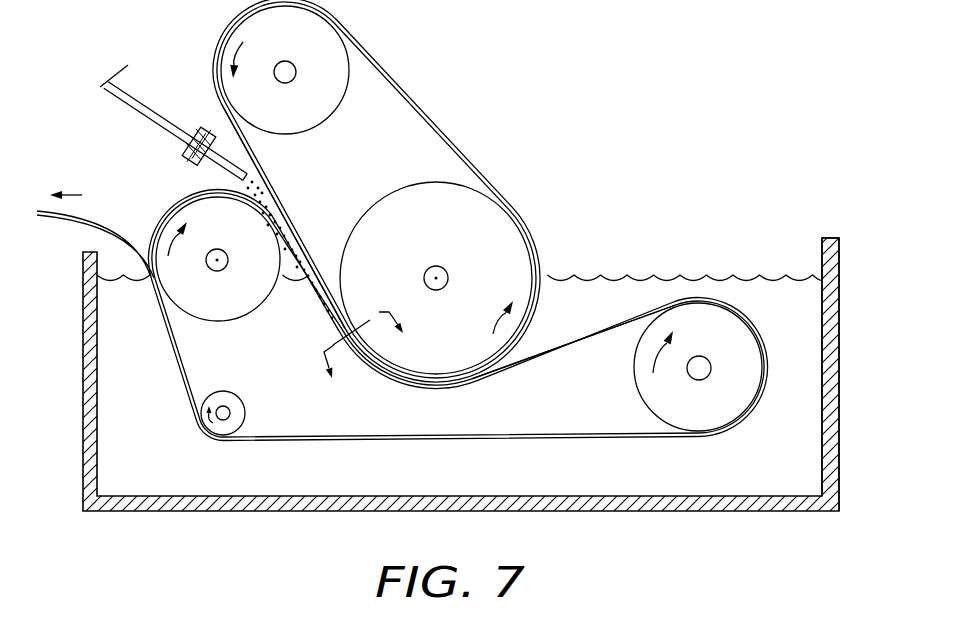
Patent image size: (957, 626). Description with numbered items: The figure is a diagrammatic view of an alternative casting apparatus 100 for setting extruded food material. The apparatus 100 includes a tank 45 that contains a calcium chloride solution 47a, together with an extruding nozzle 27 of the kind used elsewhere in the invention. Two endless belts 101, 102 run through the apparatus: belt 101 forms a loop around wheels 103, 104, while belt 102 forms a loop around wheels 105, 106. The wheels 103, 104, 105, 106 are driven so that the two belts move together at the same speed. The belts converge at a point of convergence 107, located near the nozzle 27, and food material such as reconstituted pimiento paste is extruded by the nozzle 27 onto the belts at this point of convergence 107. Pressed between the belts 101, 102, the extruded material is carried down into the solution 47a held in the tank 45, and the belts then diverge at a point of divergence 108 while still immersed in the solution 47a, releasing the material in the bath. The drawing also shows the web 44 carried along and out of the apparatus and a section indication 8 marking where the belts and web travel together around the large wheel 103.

The apparatus 100 is at (748, 218).
The endless belt 101 is at (414, 104).
The endless belt 102 is at (512, 441).
The wheel 103 is at (465, 243).
The wheel 104 is at (308, 50).
The wheel 105 is at (725, 349).
The wheel 106 is at (243, 243).
The point of convergence 107 is at (335, 213).
The point of divergence 108 is at (551, 372).
The extruding nozzle 27 is at (197, 126).
The web 44 is at (124, 240).
The tank 45 is at (840, 387).
The calcium chloride solution 47a is at (800, 463).
The section line 8- 8 is at (366, 358).